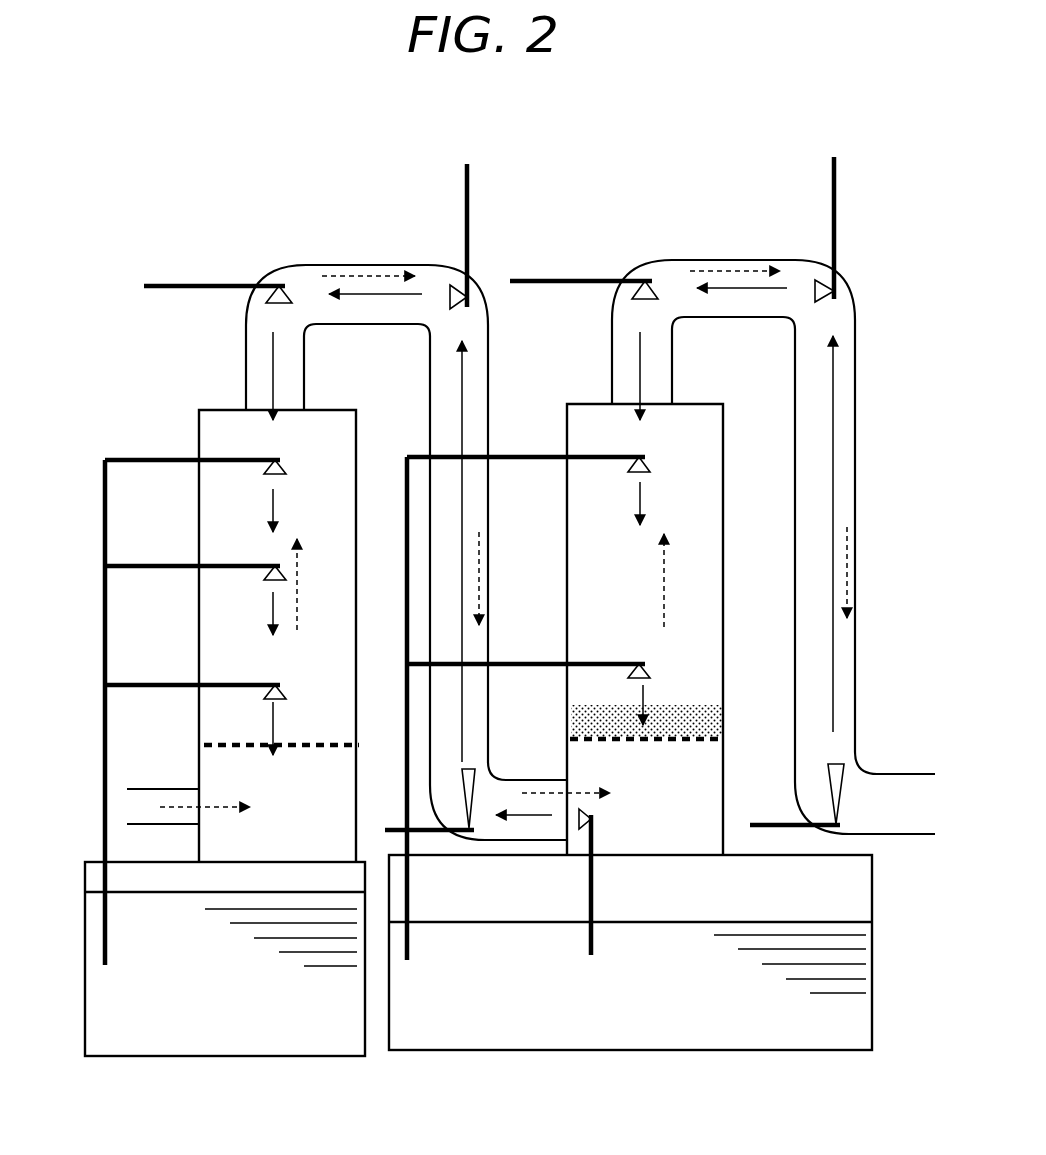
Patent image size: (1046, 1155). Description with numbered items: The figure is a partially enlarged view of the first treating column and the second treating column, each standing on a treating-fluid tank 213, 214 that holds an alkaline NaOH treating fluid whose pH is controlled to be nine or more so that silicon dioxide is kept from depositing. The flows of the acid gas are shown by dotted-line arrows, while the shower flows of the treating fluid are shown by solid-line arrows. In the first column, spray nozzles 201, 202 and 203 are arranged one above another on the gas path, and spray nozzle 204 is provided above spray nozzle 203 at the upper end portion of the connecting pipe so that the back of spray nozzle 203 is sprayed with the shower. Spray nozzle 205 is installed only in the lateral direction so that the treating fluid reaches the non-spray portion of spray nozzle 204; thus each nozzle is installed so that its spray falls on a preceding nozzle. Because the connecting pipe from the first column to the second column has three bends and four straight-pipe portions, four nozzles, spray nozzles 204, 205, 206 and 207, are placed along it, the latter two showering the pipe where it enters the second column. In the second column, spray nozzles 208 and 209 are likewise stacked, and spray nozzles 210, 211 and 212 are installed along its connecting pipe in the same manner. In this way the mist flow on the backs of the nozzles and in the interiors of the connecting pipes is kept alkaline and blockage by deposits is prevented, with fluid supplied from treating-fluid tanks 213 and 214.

The spray nozzle 201 is at (286, 690).
The spray nozzle 202 is at (286, 571).
The spray nozzle 203 is at (286, 465).
The spray nozzle 204 is at (288, 300).
The spray nozzle 205 is at (455, 302).
The spray nozzle 206 is at (470, 795).
The spray nozzle 207 is at (592, 808).
The spray nozzle 208 is at (650, 669).
The spray nozzle 209 is at (650, 462).
The spray nozzle 210 is at (652, 297).
The spray nozzle 211 is at (820, 298).
The spray nozzle 212 is at (840, 783).
The treating-fluid tank 213 is at (317, 1056).
The treating-fluid tank 214 is at (823, 1049).